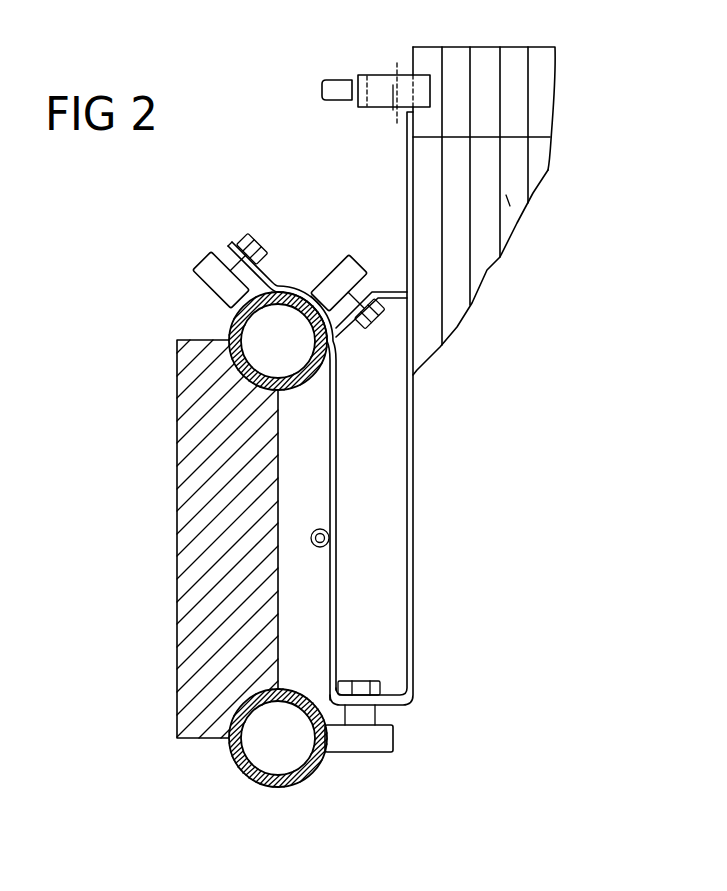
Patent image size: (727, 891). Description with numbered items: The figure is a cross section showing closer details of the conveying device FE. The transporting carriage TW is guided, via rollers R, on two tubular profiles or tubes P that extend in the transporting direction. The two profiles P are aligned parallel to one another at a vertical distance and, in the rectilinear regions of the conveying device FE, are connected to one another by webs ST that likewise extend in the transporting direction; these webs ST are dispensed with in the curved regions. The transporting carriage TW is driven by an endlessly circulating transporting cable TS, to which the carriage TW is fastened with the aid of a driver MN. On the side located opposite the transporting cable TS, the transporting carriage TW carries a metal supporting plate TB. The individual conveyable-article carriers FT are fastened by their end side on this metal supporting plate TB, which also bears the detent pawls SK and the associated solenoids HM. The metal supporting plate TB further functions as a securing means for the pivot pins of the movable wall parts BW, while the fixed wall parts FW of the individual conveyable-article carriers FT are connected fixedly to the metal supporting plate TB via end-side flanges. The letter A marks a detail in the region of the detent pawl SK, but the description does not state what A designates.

The web ST is at (192, 490).
The conveying device FE is at (124, 551).
The tubular profile P is at (230, 333).
The roller R is at (200, 265).
The transporting cable TS is at (318, 528).
The driver MN is at (317, 548).
The metal supporting plate TB is at (408, 445).
The transporting carriage TW is at (375, 515).
The movable wall part BW is at (540, 94).
The conveyable-article carrier FT is at (568, 194).
The fixed wall part FW is at (510, 205).
The detent pawl SK is at (380, 80).
The solenoid HM is at (323, 82).
The axis A is at (394, 88).